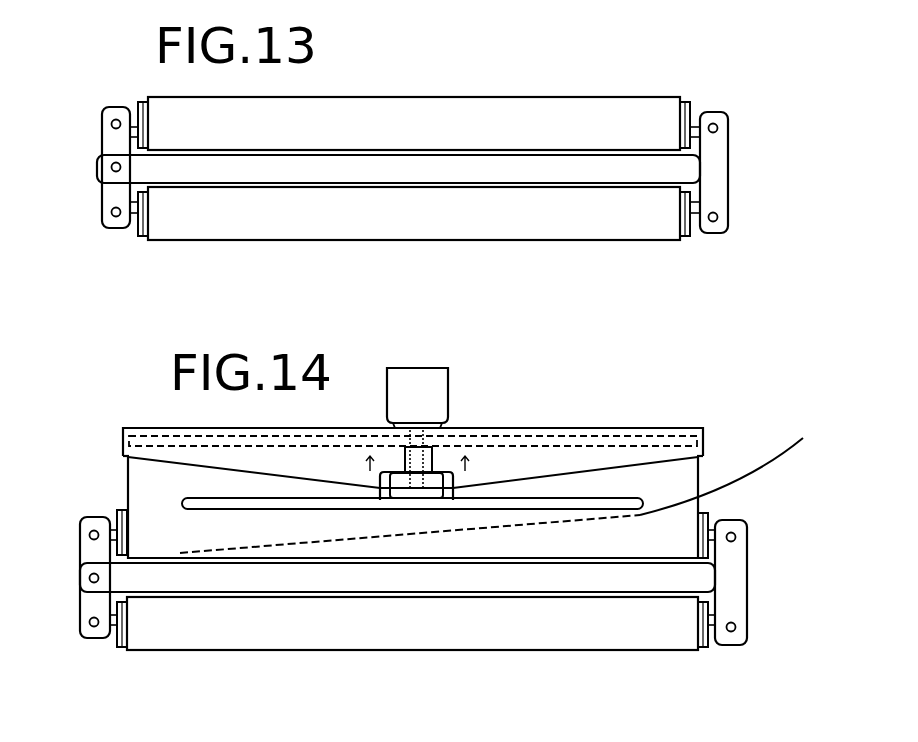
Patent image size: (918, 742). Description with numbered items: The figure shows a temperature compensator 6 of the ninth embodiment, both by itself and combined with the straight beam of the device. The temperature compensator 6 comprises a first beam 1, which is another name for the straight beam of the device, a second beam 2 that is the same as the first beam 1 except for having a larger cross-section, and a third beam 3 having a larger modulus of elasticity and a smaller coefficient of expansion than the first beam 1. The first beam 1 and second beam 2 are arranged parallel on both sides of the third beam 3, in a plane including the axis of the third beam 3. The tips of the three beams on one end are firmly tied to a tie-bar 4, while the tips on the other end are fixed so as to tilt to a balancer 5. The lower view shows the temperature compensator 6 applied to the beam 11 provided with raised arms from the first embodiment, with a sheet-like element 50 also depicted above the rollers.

In FIG. 13, the first beam 1 is at (333, 100).
In FIG. 13, the second beam 2 is at (336, 242).
In FIG. 13, the third beam 3 is at (445, 153).
In FIG. 13, the tie-bar 4 is at (729, 148).
In FIG. 13, the balancer 5 is at (100, 140).
In FIG. 13, the temperature compensator 6 is at (600, 92).
In FIG. 14, the temperature compensator 6 is at (752, 592).
In FIG. 14, the beam 11 is at (172, 422).
In FIG. 14, the sheet 50 is at (507, 527).